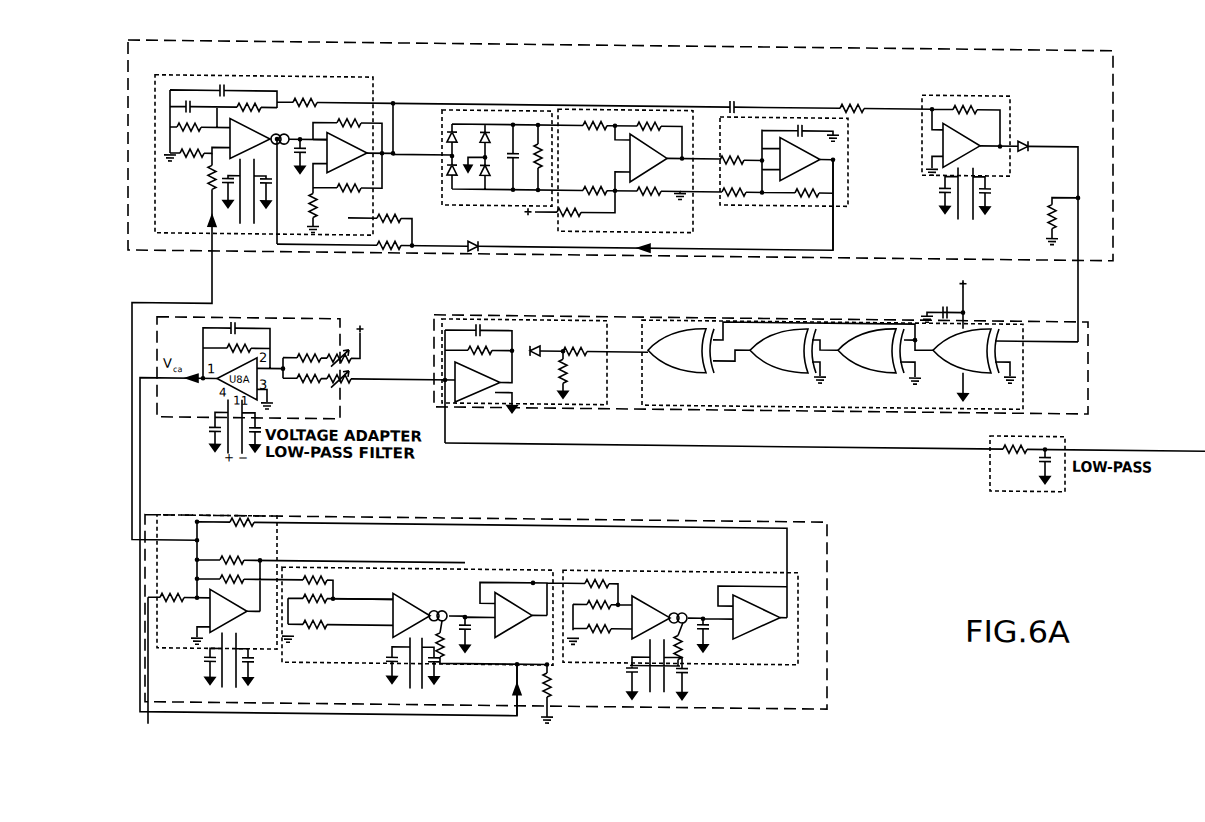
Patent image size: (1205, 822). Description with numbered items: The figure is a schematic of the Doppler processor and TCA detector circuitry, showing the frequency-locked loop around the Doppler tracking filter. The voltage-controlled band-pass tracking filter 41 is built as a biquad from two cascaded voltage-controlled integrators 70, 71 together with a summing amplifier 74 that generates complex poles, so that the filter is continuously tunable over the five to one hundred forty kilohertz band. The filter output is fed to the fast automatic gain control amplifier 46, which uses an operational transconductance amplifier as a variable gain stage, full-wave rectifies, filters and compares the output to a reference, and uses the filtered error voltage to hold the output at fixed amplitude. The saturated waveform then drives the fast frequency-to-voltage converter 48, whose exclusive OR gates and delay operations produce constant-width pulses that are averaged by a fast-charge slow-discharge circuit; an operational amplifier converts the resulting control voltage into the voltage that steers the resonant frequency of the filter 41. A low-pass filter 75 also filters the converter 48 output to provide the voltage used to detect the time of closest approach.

The fast automatic gain control amplifier 46 is at (1115, 180).
The fast frequency-to-voltage converter 48 is at (1090, 390).
The low-pass filter 75 is at (988, 457).
The voltage-controlled band-pass tracking filter 41 is at (828, 589).
The voltage-controlled integrator 70 is at (446, 593).
The voltage-controlled integrator 71 is at (682, 593).
The summing amplifier 74 is at (180, 656).